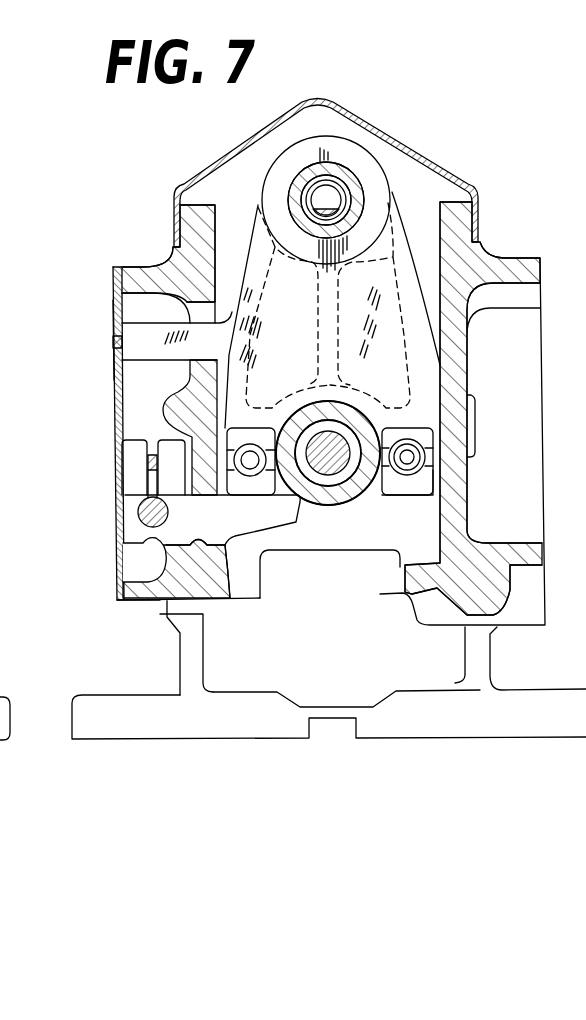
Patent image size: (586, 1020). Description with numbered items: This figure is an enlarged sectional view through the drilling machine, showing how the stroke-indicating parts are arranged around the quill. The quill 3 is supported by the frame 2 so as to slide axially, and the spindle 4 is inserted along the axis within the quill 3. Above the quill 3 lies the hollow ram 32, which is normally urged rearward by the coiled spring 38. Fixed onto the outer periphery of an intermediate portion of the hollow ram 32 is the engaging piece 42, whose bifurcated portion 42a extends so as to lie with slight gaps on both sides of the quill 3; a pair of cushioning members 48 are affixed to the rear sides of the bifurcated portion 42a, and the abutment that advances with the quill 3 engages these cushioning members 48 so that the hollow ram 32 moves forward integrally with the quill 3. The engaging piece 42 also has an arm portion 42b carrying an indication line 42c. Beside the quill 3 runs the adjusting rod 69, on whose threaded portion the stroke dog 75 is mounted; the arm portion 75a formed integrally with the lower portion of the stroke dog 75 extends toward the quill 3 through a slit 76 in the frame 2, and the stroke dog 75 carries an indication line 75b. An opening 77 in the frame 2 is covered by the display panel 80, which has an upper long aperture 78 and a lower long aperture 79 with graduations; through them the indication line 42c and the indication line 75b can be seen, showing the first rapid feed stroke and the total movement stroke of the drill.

The frame 2 is at (505, 270).
The quill 3 is at (360, 487).
The spindle 4 is at (328, 470).
The hollow ram 32 is at (350, 182).
The coiled spring 38 is at (296, 185).
The engaging piece 42 is at (405, 224).
The bifurcated portion 42a is at (413, 487).
The arm portion 42b is at (160, 350).
The indication line 42c is at (113, 343).
The cushioning members 48 is at (250, 455).
The adjusting rod 69 is at (138, 513).
The stroke dog 75 is at (144, 537).
The arm portion 75a is at (287, 513).
The indication line 75b is at (115, 467).
The slit 76 is at (193, 540).
The opening 77 is at (137, 300).
The upper long aperture 78 is at (113, 340).
The lower long aperture 79 is at (122, 492).
The display panel 80 is at (114, 388).